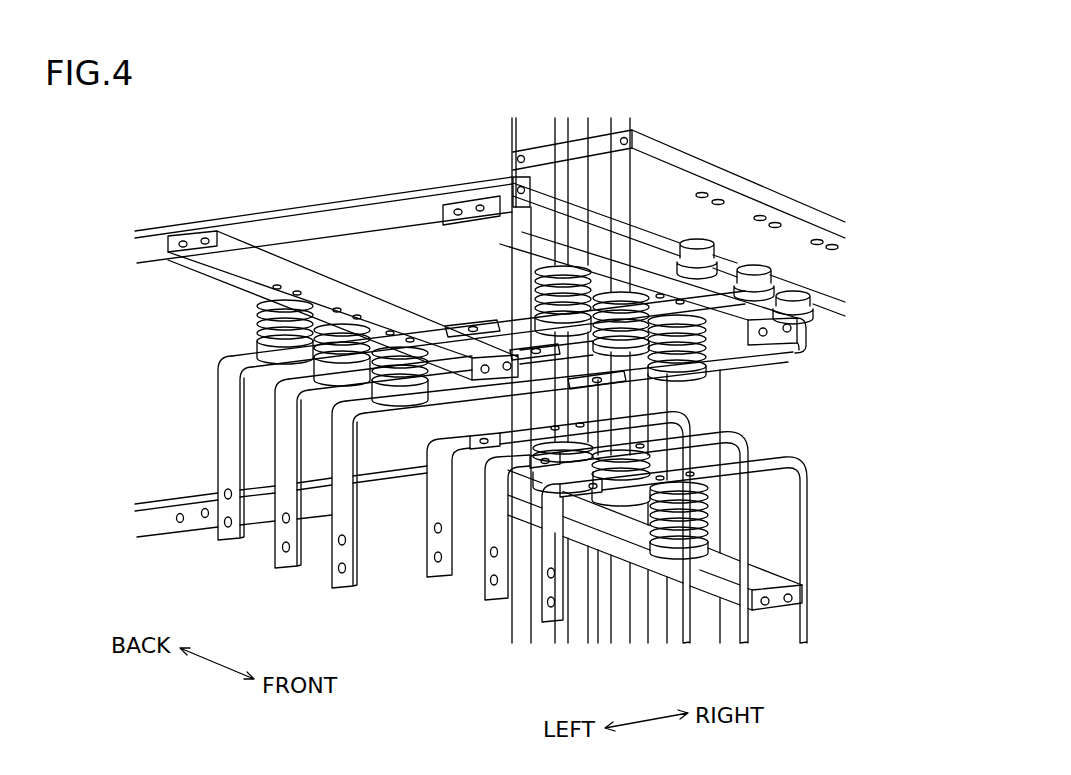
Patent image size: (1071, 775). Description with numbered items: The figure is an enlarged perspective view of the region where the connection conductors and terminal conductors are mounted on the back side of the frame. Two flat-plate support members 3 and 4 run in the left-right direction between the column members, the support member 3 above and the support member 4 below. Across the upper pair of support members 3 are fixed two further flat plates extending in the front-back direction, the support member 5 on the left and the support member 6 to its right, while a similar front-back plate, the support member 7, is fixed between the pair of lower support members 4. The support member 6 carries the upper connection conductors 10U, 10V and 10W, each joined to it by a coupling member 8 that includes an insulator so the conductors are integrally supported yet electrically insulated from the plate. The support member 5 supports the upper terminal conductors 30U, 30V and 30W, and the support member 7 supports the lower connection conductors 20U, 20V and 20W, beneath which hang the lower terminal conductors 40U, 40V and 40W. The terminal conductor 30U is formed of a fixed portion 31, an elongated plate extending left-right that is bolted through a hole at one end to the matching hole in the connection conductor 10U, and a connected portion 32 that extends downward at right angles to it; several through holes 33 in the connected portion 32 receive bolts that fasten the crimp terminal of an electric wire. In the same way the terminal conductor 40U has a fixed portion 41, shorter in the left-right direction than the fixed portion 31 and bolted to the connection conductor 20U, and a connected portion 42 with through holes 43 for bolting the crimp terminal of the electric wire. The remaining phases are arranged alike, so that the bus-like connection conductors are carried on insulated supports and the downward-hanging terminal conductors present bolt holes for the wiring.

The support member 3 is at (284, 212).
The support member 4 is at (182, 493).
The support member 5 is at (232, 275).
The support member 6 is at (778, 337).
The support member 7 is at (778, 611).
The coupling member 8 is at (258, 318).
The connection conductor 10U is at (522, 320).
The connection conductor 10V is at (580, 330).
The connection conductor 10W is at (718, 357).
The connection conductor 20U is at (675, 414).
The connection conductor 20V is at (713, 437).
The connection conductor 20W is at (730, 572).
The terminal conductor 30U is at (401, 459).
The terminal conductor 30V is at (285, 568).
The terminal conductor 30W is at (342, 589).
The fixed portion 31 is at (460, 326).
The connected portion 32 is at (222, 397).
The through holes 33 is at (222, 523).
The terminal conductor 40U is at (263, 538).
The terminal conductor 40V is at (493, 587).
The terminal conductor 40W is at (551, 612).
The fixed portion 41 is at (593, 492).
The connected portion 42 is at (433, 472).
The through holes 43 is at (435, 558).